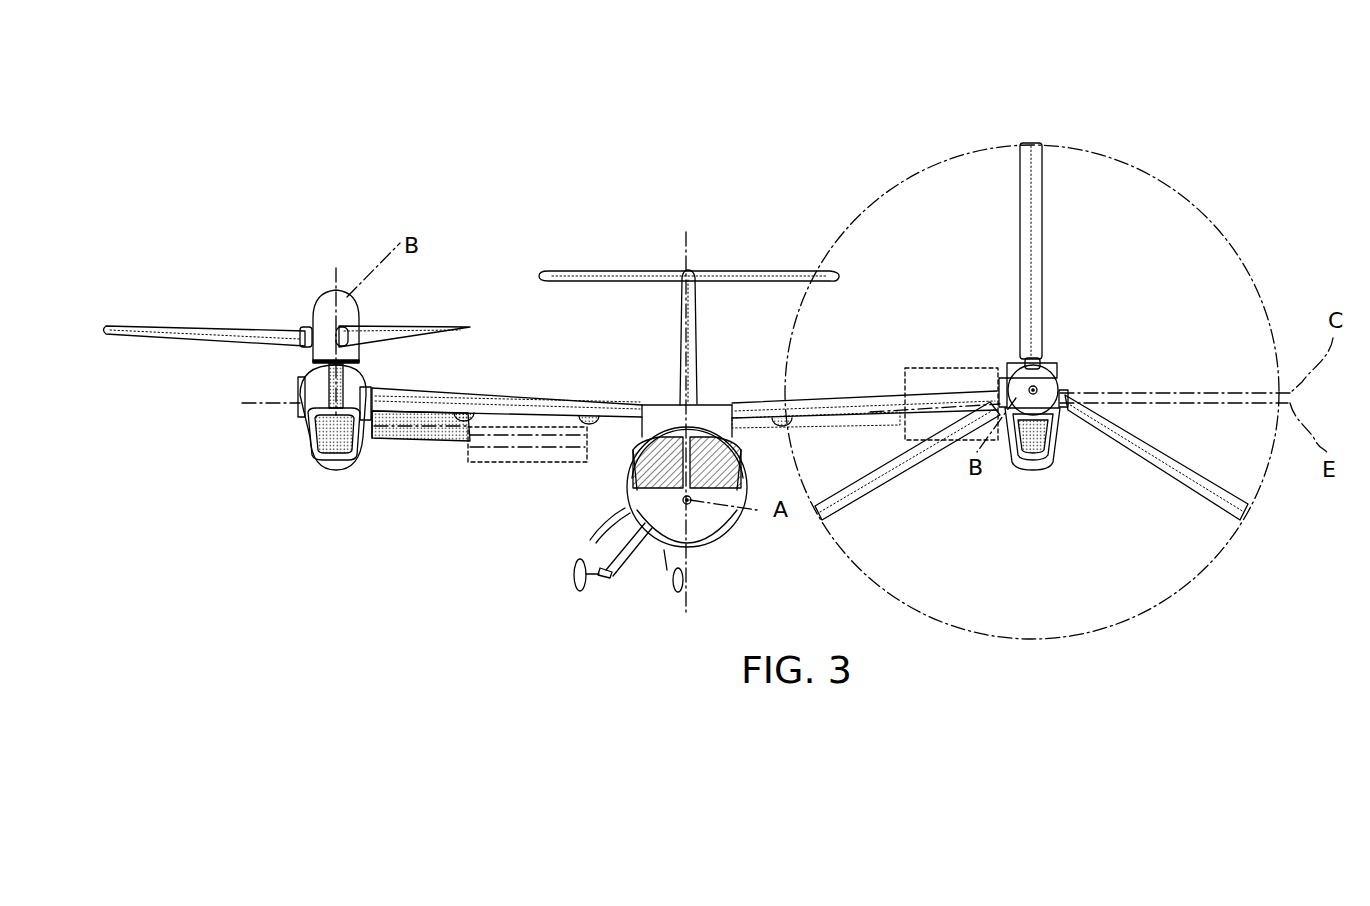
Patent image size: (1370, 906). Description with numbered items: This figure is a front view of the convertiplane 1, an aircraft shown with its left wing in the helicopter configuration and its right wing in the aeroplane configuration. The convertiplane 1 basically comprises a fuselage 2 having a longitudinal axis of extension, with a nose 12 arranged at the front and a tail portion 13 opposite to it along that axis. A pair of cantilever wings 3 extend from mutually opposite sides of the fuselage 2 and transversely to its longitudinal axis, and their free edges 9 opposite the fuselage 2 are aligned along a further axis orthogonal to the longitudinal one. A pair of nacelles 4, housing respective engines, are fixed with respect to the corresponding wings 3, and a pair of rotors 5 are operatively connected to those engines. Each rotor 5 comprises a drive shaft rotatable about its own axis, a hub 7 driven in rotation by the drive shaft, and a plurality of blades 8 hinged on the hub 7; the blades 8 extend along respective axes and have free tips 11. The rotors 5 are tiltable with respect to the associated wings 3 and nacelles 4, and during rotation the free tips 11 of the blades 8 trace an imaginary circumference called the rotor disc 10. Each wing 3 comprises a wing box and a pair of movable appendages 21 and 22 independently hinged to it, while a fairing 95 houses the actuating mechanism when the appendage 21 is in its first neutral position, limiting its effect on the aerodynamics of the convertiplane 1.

The convertiplane 1 is at (484, 116).
The fuselage 2 is at (654, 476).
The cantilever wing 3 is at (684, 365).
The nacelle 4 is at (320, 410).
The rotor 5 is at (686, 329).
The hub 7 is at (327, 308).
The blade 8 is at (696, 334).
The free edge 9 is at (358, 394).
The rotor disc 10 is at (1251, 273).
The free tip 11 is at (107, 327).
The nose 12 is at (658, 520).
The tail portion 13 is at (697, 353).
The movable appendage 21 is at (513, 430).
The movable appendage 22 is at (428, 428).
The fairing 95 is at (468, 423).